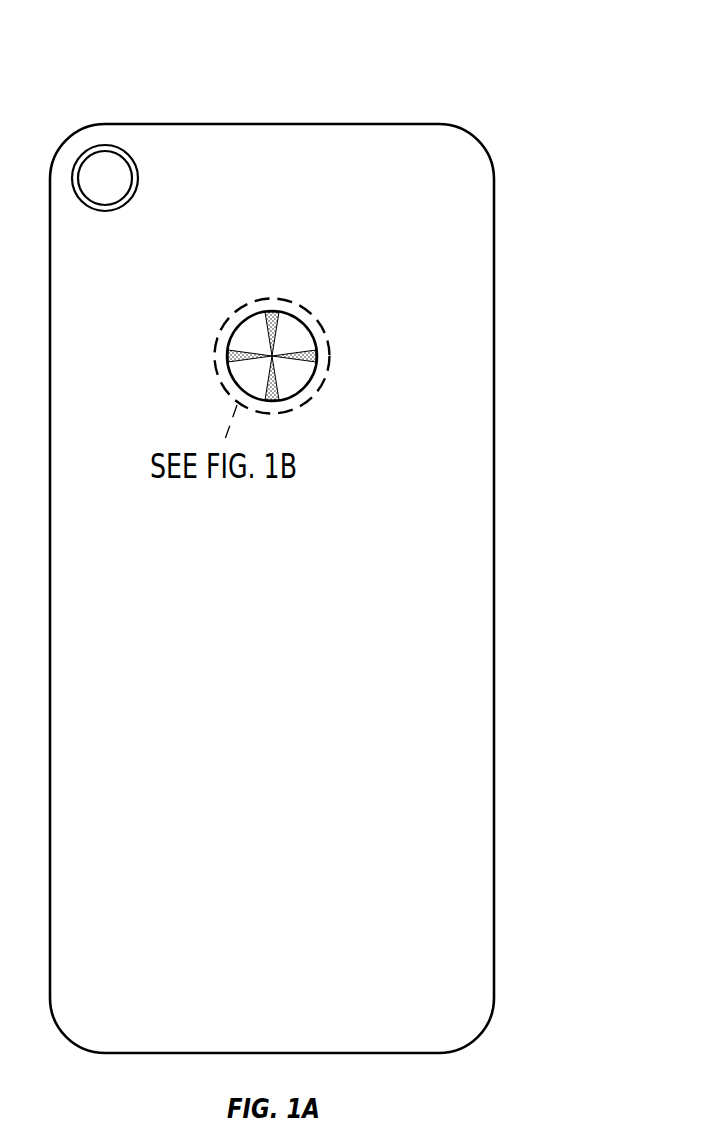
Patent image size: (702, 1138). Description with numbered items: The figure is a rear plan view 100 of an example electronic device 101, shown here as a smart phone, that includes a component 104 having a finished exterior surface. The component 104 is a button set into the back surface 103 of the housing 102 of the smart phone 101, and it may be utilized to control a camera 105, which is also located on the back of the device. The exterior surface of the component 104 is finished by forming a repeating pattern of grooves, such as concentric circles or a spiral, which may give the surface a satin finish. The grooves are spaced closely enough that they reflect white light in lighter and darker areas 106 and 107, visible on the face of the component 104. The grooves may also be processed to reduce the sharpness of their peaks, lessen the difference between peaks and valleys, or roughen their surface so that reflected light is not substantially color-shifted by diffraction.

The rear plan view 100 is at (307, 532).
The electronic device 101 is at (307, 588).
The housing 102 is at (303, 588).
The back surface 103 is at (478, 797).
The component 104 is at (296, 369).
The camera 105 is at (137, 160).
The lighter area 106 is at (315, 355).
The darker area 107 is at (298, 382).